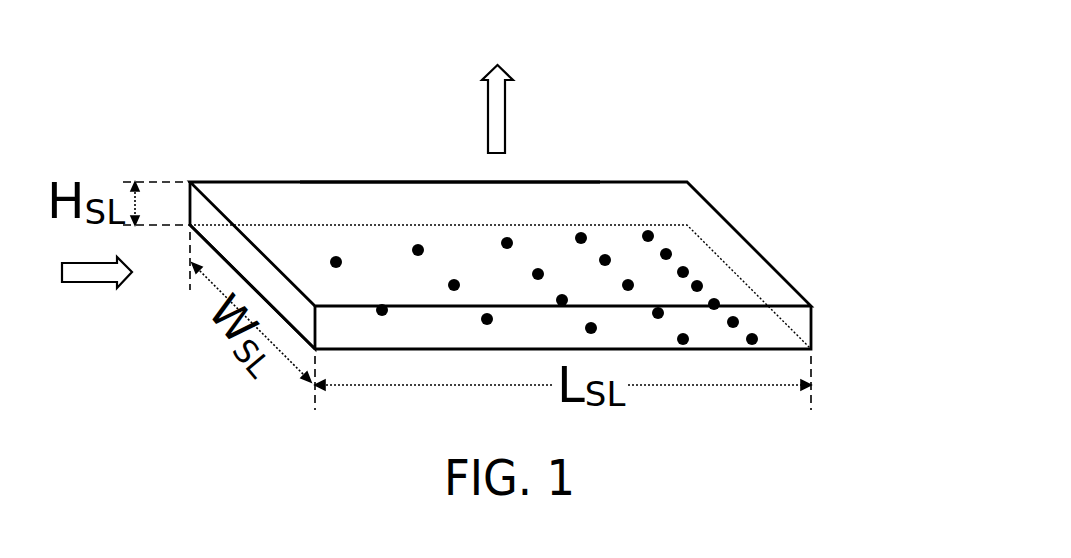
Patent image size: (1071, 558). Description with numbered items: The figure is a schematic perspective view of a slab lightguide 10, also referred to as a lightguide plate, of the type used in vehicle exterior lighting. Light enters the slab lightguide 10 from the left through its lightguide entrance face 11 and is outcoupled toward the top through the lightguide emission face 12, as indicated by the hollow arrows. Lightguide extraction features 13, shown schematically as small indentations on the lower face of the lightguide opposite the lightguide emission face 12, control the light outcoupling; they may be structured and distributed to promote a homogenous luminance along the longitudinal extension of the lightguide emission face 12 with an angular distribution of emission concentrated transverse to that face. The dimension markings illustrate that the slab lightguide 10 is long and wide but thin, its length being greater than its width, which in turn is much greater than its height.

The slab lightguide 10 is at (688, 115).
The lightguide entrance face 11 is at (243, 265).
The lightguide emission face 12 is at (368, 190).
The lightguide extraction features 13 is at (648, 233).